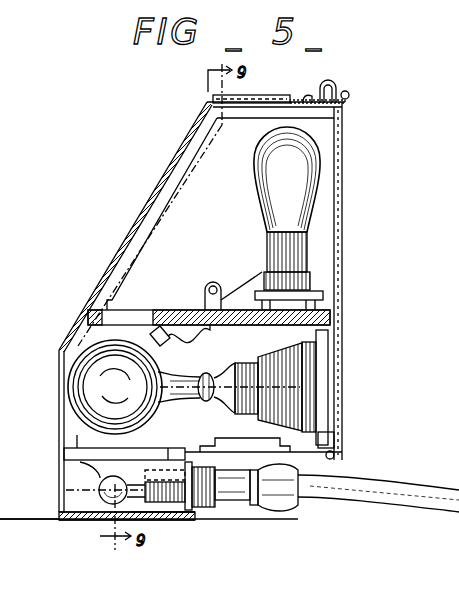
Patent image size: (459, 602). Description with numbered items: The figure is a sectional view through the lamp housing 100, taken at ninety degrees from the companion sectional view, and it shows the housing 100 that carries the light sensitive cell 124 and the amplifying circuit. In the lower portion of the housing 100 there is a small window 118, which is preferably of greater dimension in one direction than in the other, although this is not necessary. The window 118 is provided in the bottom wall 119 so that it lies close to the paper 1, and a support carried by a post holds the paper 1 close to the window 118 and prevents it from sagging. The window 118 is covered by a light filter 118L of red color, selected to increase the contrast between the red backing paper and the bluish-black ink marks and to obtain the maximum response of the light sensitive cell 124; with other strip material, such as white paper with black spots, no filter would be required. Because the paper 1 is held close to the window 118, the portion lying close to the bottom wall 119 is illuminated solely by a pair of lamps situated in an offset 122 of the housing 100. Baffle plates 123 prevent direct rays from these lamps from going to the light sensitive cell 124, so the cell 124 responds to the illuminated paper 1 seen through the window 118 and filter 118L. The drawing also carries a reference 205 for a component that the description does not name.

The housing 100 is at (124, 250).
The lamp bulb 205 is at (287, 186).
The light sensitive cell 124 is at (115, 383).
The baffle plates 123 is at (96, 478).
The offset 122 is at (98, 485).
The paper 1 is at (37, 504).
The bottom wall 119 is at (80, 522).
The window 118 is at (104, 524).
The light filter 118L is at (150, 521).